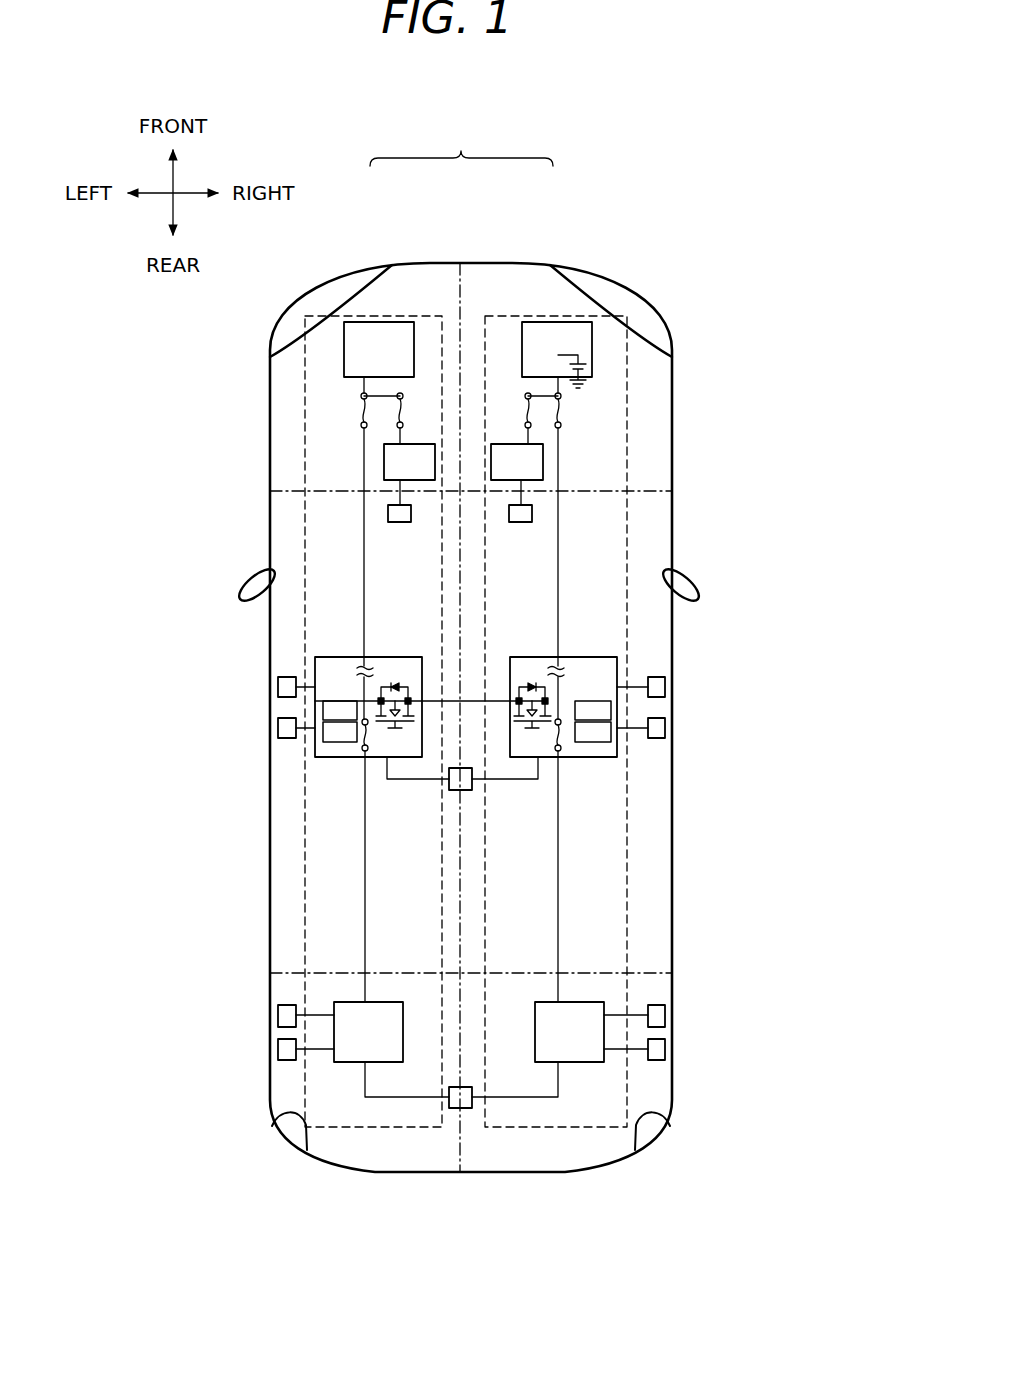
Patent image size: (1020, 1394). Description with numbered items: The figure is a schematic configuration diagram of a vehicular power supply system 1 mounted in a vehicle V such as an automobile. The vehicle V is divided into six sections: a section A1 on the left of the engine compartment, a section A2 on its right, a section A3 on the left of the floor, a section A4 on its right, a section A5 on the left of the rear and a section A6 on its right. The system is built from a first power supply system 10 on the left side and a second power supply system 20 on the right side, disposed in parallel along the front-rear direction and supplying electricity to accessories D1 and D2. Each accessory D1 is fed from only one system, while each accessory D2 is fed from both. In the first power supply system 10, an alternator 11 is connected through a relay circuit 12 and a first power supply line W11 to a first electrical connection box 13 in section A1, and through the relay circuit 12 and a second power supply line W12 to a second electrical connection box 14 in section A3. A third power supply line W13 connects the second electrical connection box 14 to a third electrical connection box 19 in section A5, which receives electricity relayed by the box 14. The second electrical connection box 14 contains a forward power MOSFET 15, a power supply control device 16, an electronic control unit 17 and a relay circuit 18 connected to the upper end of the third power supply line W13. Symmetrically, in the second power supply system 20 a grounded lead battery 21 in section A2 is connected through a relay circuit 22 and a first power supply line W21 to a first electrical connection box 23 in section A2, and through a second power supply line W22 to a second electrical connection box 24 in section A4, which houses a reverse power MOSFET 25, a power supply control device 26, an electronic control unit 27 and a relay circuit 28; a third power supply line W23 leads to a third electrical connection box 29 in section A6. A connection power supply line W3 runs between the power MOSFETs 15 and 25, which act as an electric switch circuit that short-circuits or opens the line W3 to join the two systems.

The vehicular power supply system 1 is at (452, 146).
The first power supply system 10 is at (389, 307).
The second power supply system 20 is at (537, 307).
The alternator 11 is at (344, 358).
The relay circuit 12 is at (358, 407).
The first electrical connection box 13 is at (384, 462).
The second electrical connection box 14 is at (333, 657).
The forward power MOSFET 15 is at (380, 700).
The power supply control device 16 is at (323, 708).
The electronic control unit 17 is at (340, 742).
The relay circuit 18 is at (378, 737).
The third electrical connection box 19 is at (334, 1002).
The lead battery 21 is at (592, 350).
The relay circuit 22 is at (566, 410).
The first electrical connection box 23 is at (543, 462).
The second electrical connection box 24 is at (582, 657).
The reverse power MOSFET 25 is at (545, 683).
The power supply control device 26 is at (611, 708).
The electronic control unit 27 is at (597, 742).
The relay circuit 28 is at (546, 738).
The third electrical connection box 29 is at (585, 1002).
The vehicle V is at (637, 315).
The section A1 is at (373, 295).
The section A2 is at (578, 290).
The section A3 is at (285, 900).
The section A4 is at (675, 868).
The section A5 is at (348, 1150).
The section A6 is at (598, 1150).
The accessory D1 is at (388, 513).
The accessory D2 is at (472, 790).
The first power supply line W11 is at (402, 438).
The second power supply line W12 is at (364, 440).
The third power supply line W13 is at (365, 930).
The first power supply line W21 is at (522, 438).
The second power supply line W22 is at (558, 440).
The third power supply line W23 is at (558, 926).
The connection power supply line W3 is at (497, 701).